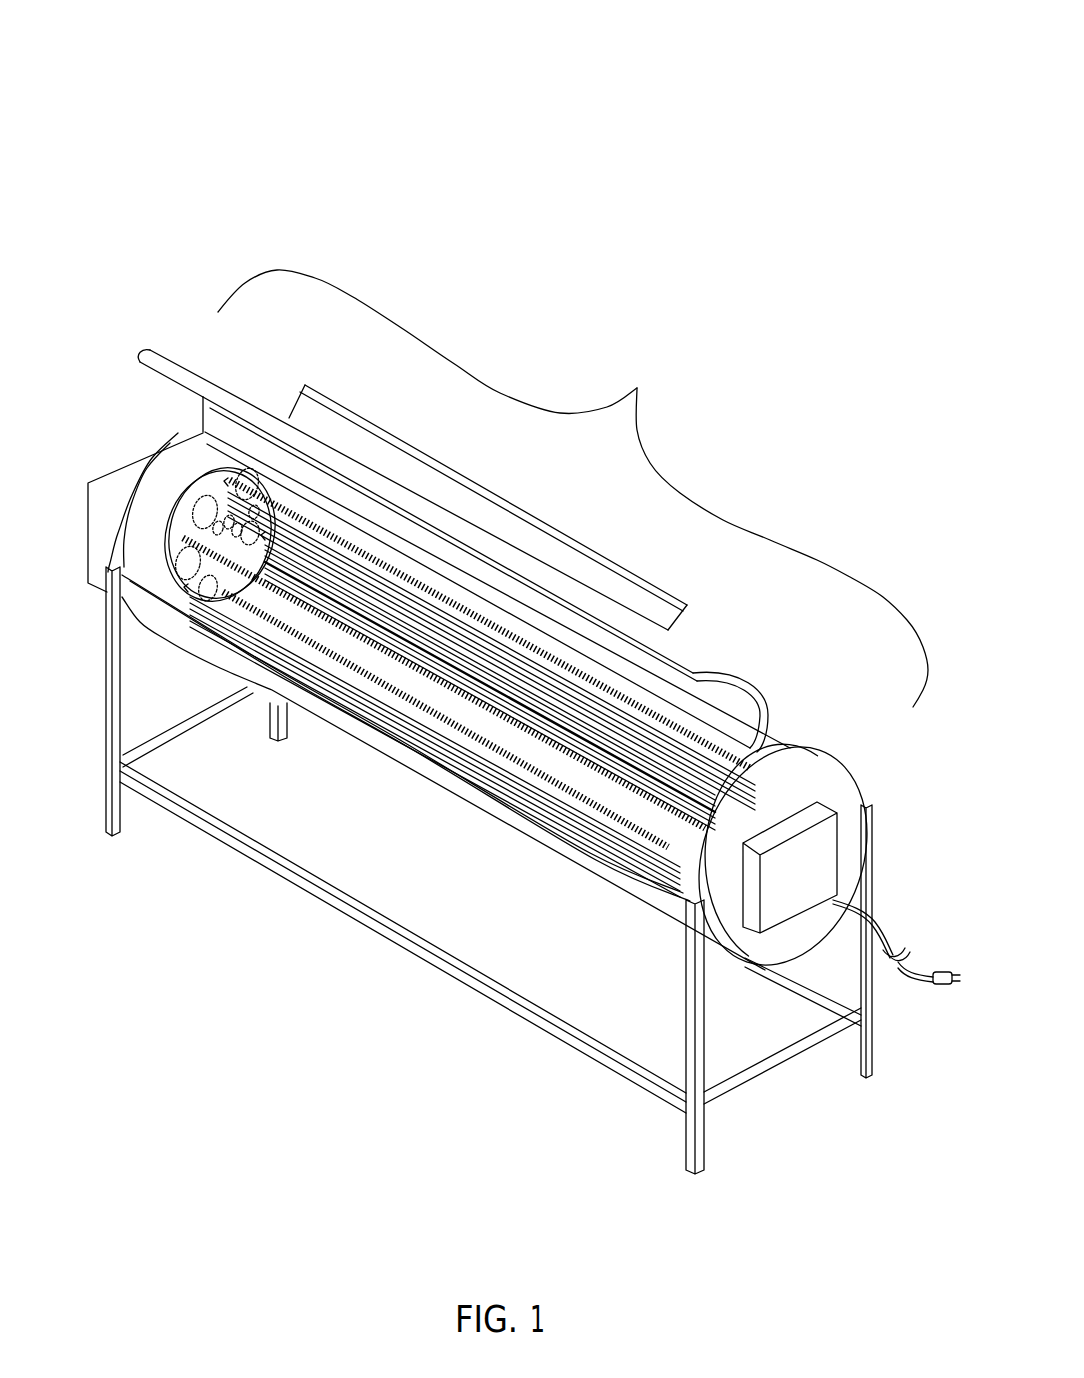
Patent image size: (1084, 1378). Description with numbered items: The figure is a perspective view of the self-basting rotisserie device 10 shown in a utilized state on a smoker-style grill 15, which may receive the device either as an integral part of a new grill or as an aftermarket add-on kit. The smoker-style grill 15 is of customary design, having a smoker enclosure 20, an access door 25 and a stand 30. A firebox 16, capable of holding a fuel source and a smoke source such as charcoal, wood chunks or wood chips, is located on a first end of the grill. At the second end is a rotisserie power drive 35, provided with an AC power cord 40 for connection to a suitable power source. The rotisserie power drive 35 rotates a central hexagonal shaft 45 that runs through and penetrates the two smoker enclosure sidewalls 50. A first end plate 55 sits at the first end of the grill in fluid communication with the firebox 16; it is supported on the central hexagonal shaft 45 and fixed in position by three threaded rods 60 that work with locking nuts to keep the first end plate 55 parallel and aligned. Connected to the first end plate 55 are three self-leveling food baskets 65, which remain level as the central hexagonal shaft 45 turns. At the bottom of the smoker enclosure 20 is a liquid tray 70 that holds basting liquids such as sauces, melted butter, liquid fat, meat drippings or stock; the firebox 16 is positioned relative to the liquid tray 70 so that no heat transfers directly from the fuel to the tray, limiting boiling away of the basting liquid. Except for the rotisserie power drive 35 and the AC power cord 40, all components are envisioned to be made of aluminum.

The self-basting rotisserie device 10 is at (135, 193).
The smoker-style grill 15 is at (640, 388).
The firebox 16 is at (100, 580).
The smoker enclosure 20 is at (812, 748).
The access door 25 is at (698, 647).
The stand 30 is at (112, 808).
The rotisserie power drive 35 is at (830, 838).
The AC power cord 40 is at (875, 920).
The central hexagonal shaft 45 is at (233, 535).
The smoker enclosure sidewalls 50 is at (188, 467).
The first end plate 55 is at (200, 485).
The threaded rods 60 is at (725, 753).
The self-leveling food baskets 65 is at (698, 742).
The liquid tray 70 is at (647, 878).